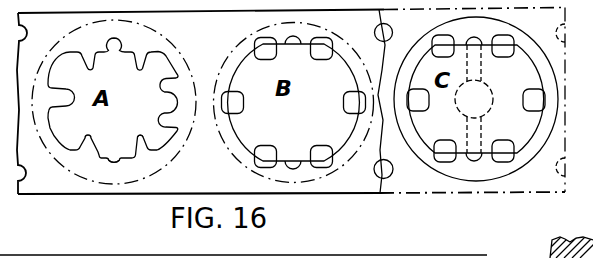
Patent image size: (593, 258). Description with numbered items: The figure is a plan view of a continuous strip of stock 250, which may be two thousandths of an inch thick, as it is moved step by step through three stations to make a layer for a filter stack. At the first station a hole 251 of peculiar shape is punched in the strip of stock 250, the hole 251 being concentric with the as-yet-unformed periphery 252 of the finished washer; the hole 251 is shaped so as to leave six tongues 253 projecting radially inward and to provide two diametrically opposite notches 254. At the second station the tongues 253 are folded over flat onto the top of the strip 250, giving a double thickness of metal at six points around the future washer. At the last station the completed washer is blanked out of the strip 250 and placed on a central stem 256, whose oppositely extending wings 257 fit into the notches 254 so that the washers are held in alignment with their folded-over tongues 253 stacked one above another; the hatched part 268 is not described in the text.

The strip of stock 250 is at (53, 194).
The hole 251 is at (172, 77).
The periphery 252 is at (86, 176).
The tongues 253 is at (147, 119).
The notches 254 is at (115, 173).
The central stem 256 is at (491, 108).
The wings 257 is at (483, 74).
The member 268 is at (591, 228).